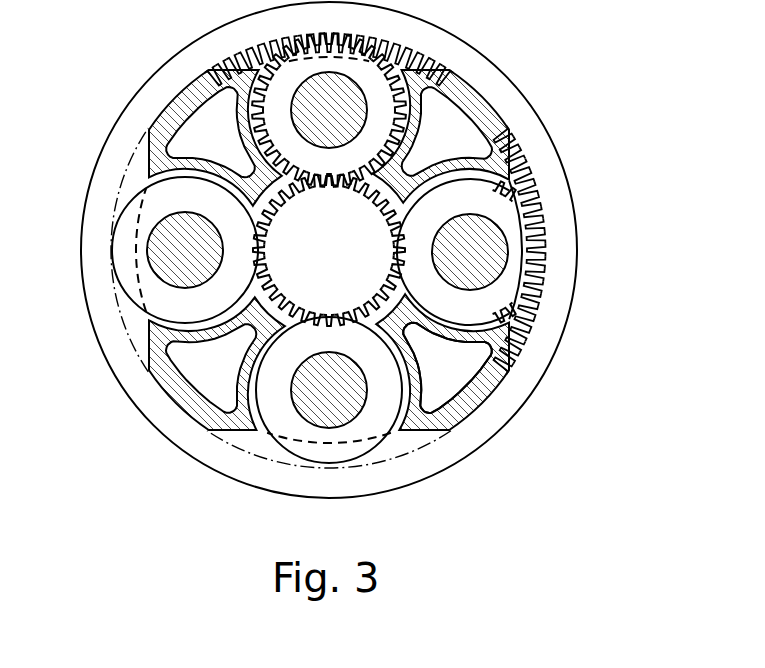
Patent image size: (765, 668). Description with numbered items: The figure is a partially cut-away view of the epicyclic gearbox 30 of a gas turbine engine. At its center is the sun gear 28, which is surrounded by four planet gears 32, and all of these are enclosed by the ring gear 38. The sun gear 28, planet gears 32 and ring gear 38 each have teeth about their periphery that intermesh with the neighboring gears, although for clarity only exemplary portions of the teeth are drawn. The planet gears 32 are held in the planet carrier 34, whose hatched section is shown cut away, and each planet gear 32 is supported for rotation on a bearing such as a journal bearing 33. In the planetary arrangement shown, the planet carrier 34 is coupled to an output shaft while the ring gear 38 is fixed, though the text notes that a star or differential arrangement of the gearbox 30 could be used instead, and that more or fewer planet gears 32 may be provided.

The epicyclic gearbox 30 is at (145, 88).
The sun gear 28 is at (343, 262).
The planet gear 32 is at (481, 208).
The journal bearing 33 is at (363, 412).
The planet carrier 34 is at (455, 345).
The ring gear 38 is at (578, 228).